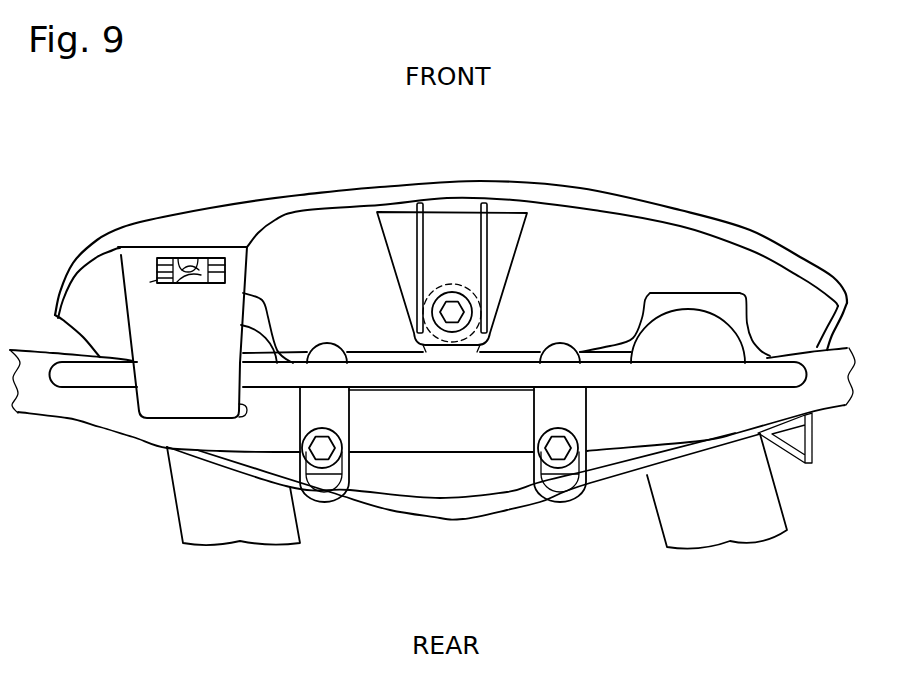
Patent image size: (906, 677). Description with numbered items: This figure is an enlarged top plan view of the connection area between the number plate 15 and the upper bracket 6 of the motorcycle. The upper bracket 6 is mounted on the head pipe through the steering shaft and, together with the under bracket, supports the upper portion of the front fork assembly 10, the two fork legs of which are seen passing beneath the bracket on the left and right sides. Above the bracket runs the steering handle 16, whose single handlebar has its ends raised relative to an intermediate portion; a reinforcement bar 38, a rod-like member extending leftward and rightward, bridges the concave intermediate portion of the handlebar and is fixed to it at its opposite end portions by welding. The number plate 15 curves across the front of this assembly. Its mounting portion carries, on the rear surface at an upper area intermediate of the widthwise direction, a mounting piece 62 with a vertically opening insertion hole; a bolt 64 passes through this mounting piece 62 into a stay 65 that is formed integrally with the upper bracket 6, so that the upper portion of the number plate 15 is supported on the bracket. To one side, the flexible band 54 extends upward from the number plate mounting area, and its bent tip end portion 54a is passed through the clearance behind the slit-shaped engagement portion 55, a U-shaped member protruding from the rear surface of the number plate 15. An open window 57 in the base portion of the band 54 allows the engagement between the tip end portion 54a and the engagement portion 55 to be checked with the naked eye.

The upper bracket 6 is at (402, 475).
The front fork assembly 10 is at (197, 512).
The number plate 15 is at (317, 192).
The steering handle 16 is at (503, 435).
The reinforcement bar 38 is at (423, 373).
The flexible band 54 is at (157, 389).
The tip end portion 54a is at (203, 263).
The engagement portion 55 is at (195, 260).
The open window 57 is at (157, 280).
The mounting piece 62 is at (505, 238).
The bolt 64 is at (458, 309).
The stay 65 is at (470, 336).